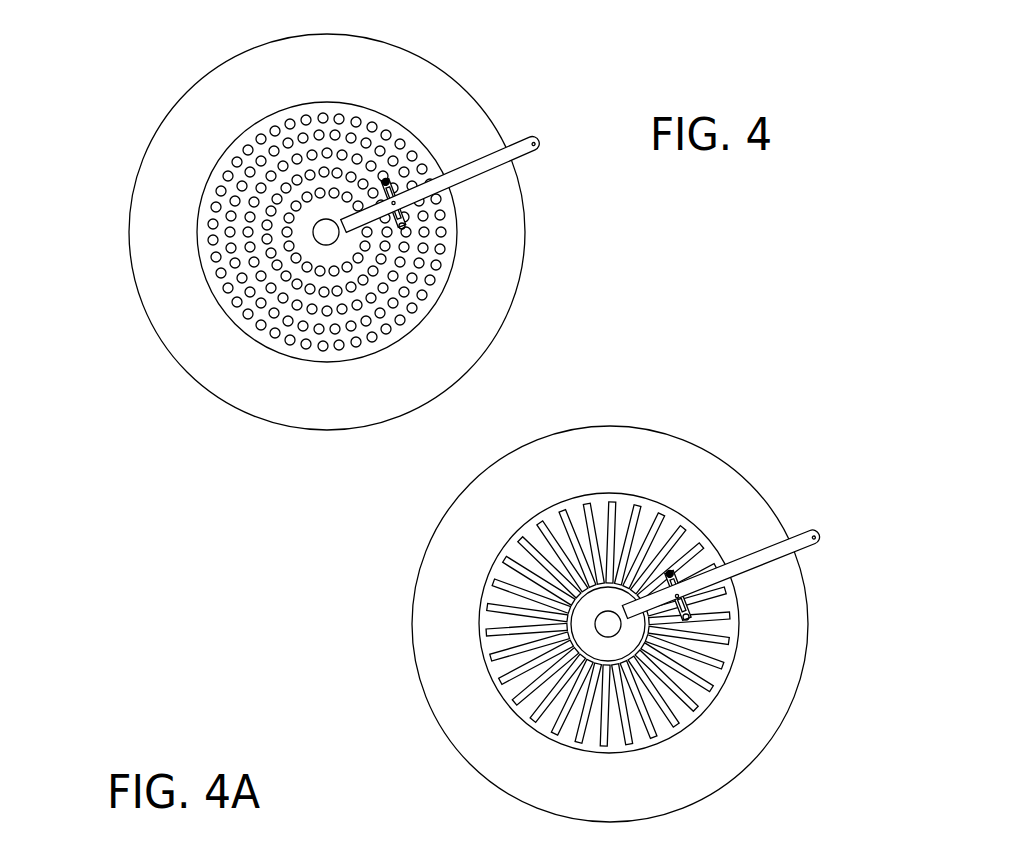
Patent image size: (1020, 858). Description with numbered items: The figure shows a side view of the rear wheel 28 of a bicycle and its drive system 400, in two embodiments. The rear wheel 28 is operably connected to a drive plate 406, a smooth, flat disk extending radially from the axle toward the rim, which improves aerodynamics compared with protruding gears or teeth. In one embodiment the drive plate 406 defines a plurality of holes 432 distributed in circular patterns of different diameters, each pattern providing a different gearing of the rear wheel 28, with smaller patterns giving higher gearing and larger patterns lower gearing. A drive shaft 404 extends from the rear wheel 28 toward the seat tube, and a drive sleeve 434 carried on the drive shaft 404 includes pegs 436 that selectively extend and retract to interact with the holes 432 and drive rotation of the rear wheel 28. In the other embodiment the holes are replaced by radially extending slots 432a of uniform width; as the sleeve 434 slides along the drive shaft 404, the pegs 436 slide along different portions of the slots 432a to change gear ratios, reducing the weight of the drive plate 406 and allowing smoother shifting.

In FIG. 4, the rear wheel 28 is at (173, 83).
In FIG. 4A, the rear wheel 28 is at (383, 650).
In FIG. 4, the drive system 400 is at (498, 103).
In FIG. 4A, the drive system 400 is at (778, 482).
In FIG. 4, the drive plate 406 is at (195, 207).
In FIG. 4A, the drive plate 406 is at (478, 590).
In FIG. 4, the holes 432 is at (245, 317).
In FIG. 4A, the radially extending slots 432a is at (537, 703).
In FIG. 4, the drive sleeve 434 is at (386, 179).
In FIG. 4A, the drive sleeve 434 is at (678, 565).
In FIG. 4, the drive shaft 404 is at (530, 157).
In FIG. 4A, the drive shaft 404 is at (805, 552).
In FIG. 4, the pegs 436 is at (404, 226).
In FIG. 4A, the pegs 436 is at (687, 618).